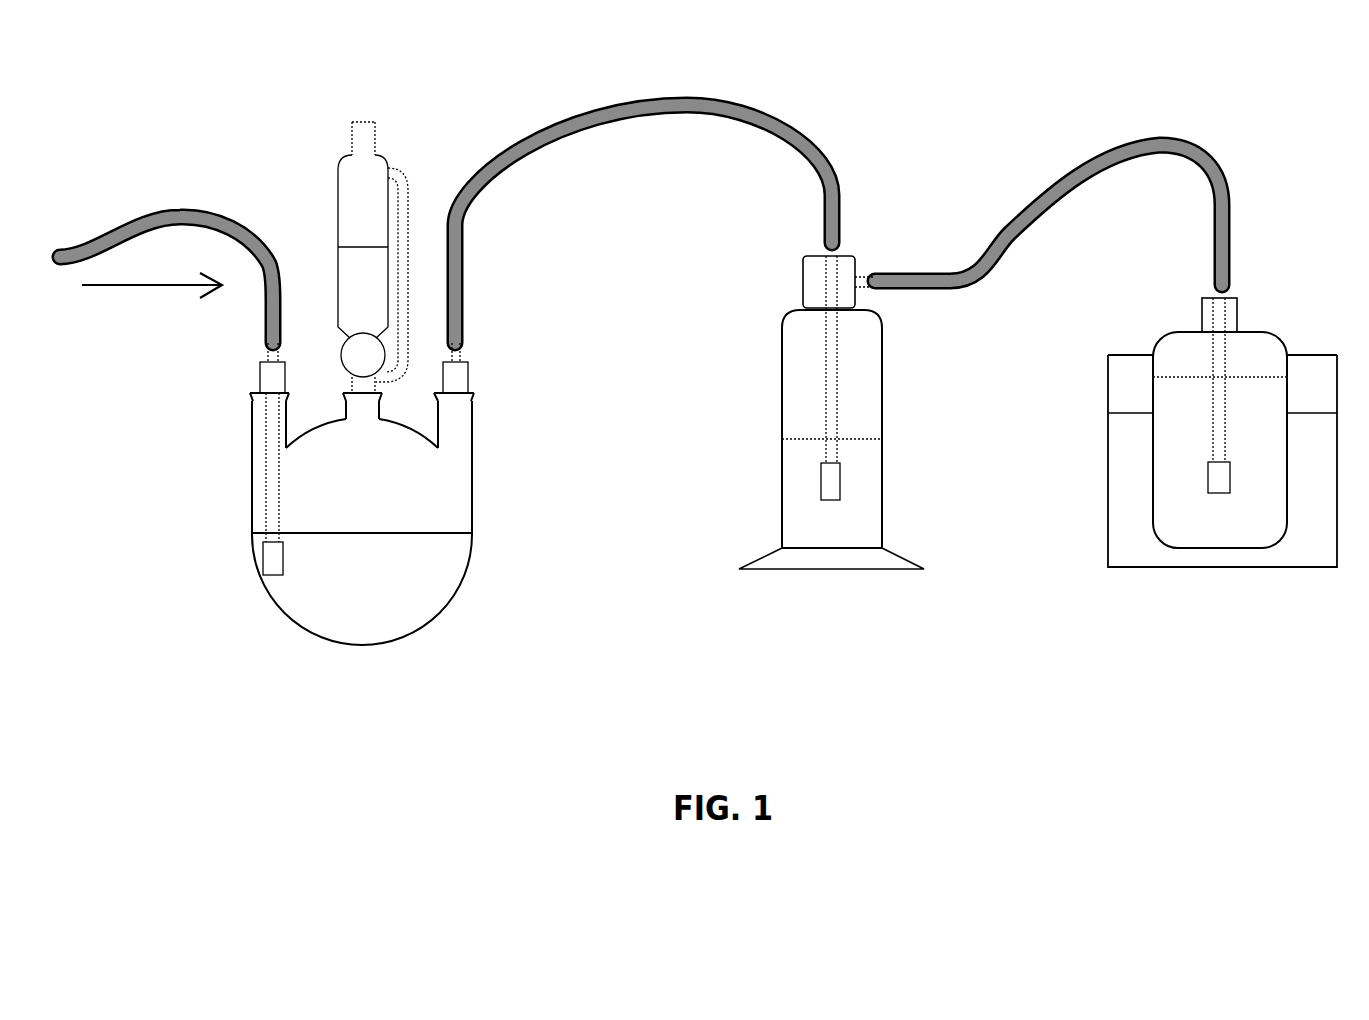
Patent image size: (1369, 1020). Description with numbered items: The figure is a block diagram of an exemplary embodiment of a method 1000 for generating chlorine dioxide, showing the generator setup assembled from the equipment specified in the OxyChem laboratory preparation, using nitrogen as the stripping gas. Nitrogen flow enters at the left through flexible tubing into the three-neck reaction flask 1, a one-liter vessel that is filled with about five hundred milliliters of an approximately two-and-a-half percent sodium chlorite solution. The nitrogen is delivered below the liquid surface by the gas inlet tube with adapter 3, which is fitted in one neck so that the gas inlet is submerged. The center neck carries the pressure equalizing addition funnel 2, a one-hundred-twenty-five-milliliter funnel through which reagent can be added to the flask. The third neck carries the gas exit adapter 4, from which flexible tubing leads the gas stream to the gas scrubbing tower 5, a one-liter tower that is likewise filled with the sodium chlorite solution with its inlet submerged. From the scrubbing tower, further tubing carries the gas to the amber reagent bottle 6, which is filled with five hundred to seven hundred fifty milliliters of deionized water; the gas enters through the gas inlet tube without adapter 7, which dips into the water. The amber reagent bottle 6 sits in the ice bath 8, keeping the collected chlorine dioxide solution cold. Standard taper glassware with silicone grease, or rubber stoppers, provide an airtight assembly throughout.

The method 1000 is at (698, 405).
The three-neck reaction flask 1 is at (384, 559).
The pressure equalizing addition funnel 2 is at (352, 257).
The gas inlet tube, with adapter 3 is at (290, 469).
The gas exit adapter 4 is at (476, 368).
The gas scrubbing tower 5 is at (831, 465).
The amber reagent bottle 6 is at (1240, 308).
The gas inlet tube, without adapter 7 is at (1220, 423).
The ice bath 8 is at (1222, 502).